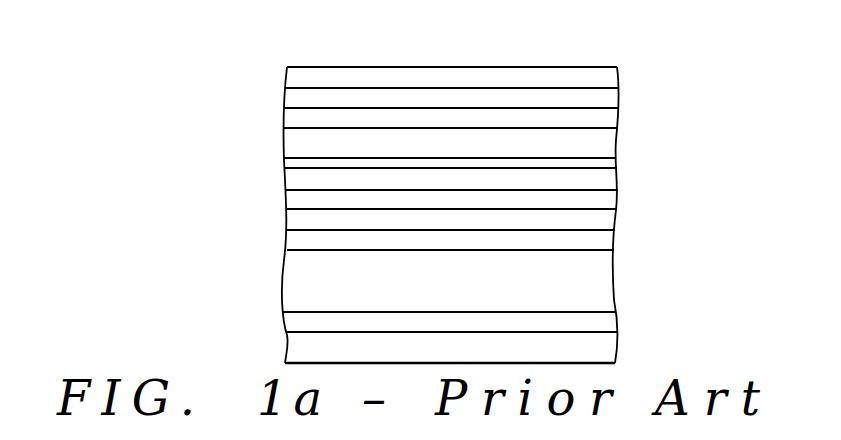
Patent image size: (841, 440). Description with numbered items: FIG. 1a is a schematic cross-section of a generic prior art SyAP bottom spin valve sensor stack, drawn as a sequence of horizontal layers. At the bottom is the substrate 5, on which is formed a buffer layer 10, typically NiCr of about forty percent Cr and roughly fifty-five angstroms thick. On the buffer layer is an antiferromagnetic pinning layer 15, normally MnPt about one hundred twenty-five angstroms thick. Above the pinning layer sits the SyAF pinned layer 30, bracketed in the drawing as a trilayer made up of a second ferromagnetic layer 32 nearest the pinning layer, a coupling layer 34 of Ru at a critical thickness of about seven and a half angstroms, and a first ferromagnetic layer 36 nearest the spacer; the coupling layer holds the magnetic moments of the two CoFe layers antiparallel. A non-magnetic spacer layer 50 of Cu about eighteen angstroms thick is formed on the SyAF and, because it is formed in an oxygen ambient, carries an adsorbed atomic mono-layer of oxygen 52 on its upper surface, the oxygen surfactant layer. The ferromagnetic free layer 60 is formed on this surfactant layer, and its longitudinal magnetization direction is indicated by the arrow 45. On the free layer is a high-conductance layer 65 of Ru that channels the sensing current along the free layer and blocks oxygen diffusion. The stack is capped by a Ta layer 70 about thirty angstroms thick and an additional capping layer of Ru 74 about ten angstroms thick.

The substrate 5 is at (621, 346).
The buffer layer 10 is at (621, 322).
The antiferromagnetic pinning layer 15 is at (621, 278).
The SyAF pinned layer 30 is at (268, 188).
The second ferromagnetic layer 32 is at (621, 242).
The coupling layer 34 is at (621, 222).
The first ferromagnetic layer 36 is at (621, 200).
The arrow 45 is at (377, 142).
The spacer layer 50 is at (621, 183).
The oxygen surfactant layer 52 is at (621, 163).
The ferromagnetic free layer 60 is at (621, 148).
The high-conductance layer 65 is at (621, 120).
The Ta layer 70 is at (621, 96).
The additional capping layer of Ru 74 is at (621, 72).